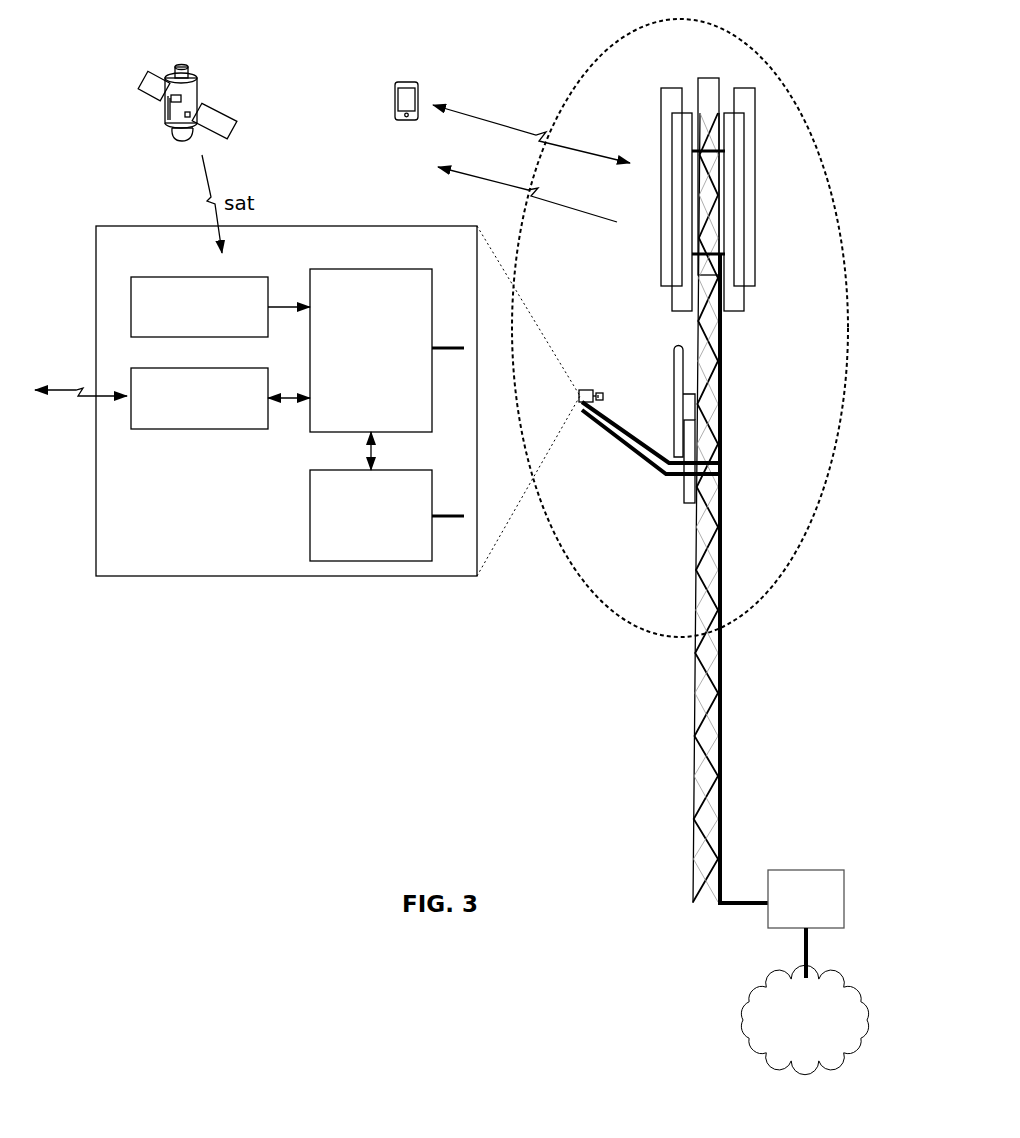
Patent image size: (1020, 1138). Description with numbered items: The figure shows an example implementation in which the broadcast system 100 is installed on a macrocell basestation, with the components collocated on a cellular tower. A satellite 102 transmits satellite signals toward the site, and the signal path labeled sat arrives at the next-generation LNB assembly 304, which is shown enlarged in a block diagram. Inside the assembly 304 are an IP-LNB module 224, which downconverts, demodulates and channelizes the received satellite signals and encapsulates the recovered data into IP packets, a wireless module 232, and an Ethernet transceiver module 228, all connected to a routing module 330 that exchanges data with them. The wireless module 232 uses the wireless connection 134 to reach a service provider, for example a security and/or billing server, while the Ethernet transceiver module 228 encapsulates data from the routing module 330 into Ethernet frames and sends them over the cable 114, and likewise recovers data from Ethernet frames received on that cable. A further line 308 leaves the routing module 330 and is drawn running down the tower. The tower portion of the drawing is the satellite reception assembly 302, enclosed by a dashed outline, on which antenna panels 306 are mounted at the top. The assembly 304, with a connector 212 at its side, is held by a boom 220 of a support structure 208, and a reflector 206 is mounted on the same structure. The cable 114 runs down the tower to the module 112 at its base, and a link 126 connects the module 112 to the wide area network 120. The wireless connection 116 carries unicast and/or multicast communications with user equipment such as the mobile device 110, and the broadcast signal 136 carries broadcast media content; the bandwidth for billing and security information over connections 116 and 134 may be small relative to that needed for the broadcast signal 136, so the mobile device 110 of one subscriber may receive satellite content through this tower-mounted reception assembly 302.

The system 100 is at (792, 99).
The satellite 102 is at (196, 80).
The mobile device 110 is at (395, 104).
The module 112 is at (789, 908).
The cable 114 is at (721, 541).
The connection 116 is at (492, 112).
The wide area network 120 is at (788, 1043).
The backhaul link 126 is at (808, 960).
The connection 134 is at (76, 390).
The signal 136 is at (460, 174).
The parabolic reflector 206 is at (674, 370).
The support structure 208 is at (687, 494).
The connector 212 is at (604, 396).
The boom 220 is at (622, 432).
The IP-LNB module 224 is at (183, 323).
The Ethernet transceiver module 228 is at (354, 546).
The wireless module 232 is at (183, 416).
The satellite reception assembly 302 is at (610, 352).
The assembly 304 is at (318, 251).
The antenna panels 306 is at (651, 88).
The RF cable 308 is at (720, 390).
The routing module 330 is at (354, 370).